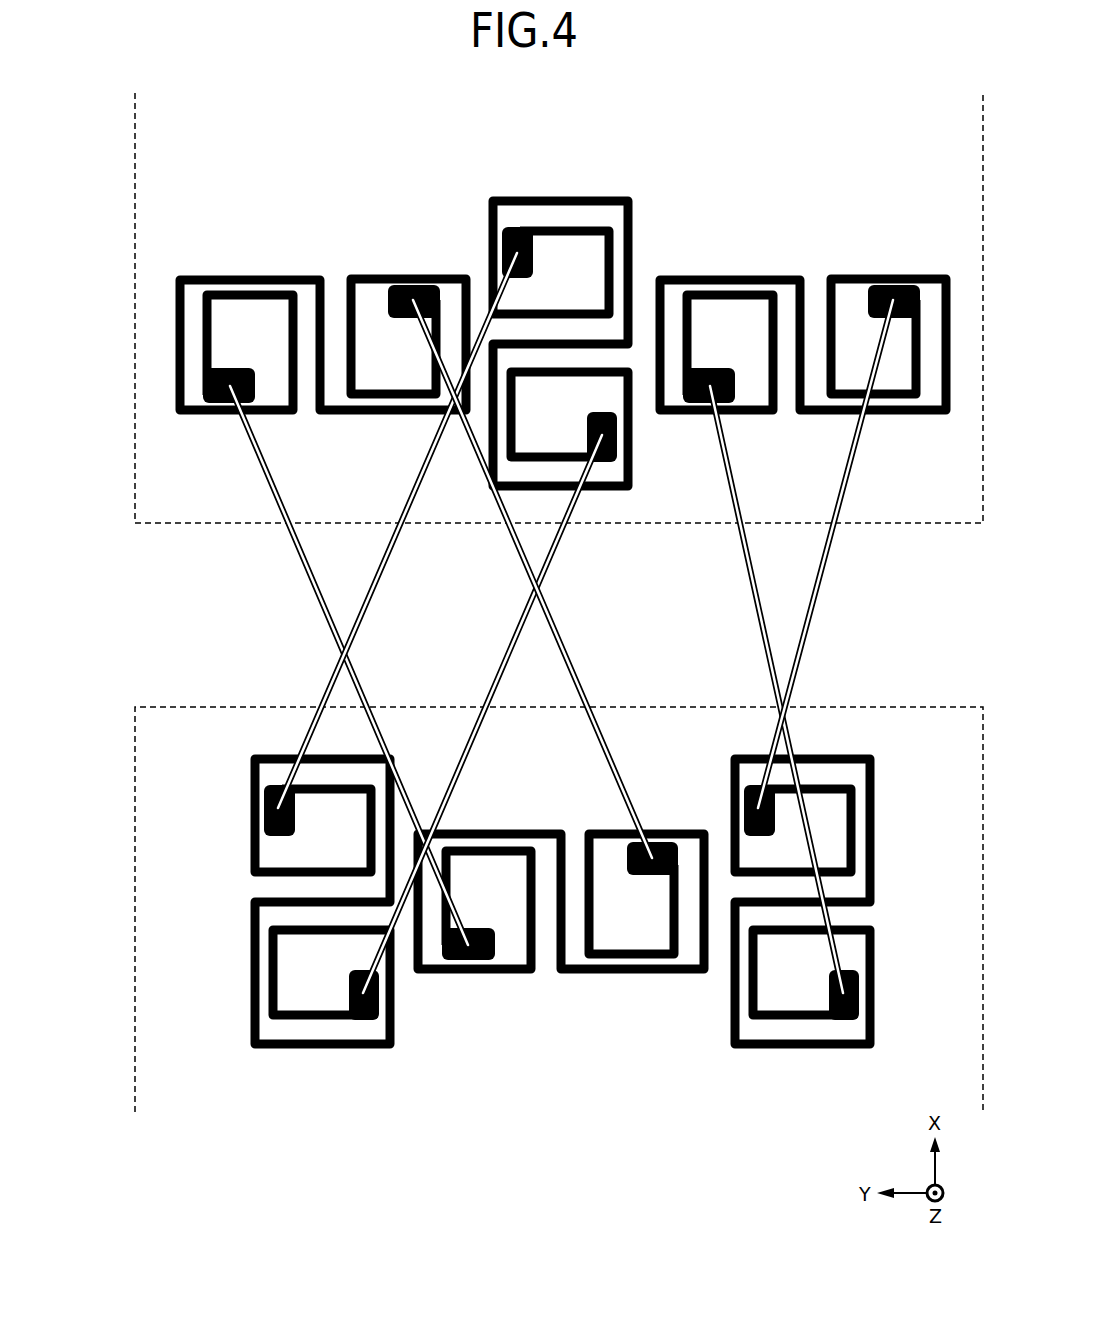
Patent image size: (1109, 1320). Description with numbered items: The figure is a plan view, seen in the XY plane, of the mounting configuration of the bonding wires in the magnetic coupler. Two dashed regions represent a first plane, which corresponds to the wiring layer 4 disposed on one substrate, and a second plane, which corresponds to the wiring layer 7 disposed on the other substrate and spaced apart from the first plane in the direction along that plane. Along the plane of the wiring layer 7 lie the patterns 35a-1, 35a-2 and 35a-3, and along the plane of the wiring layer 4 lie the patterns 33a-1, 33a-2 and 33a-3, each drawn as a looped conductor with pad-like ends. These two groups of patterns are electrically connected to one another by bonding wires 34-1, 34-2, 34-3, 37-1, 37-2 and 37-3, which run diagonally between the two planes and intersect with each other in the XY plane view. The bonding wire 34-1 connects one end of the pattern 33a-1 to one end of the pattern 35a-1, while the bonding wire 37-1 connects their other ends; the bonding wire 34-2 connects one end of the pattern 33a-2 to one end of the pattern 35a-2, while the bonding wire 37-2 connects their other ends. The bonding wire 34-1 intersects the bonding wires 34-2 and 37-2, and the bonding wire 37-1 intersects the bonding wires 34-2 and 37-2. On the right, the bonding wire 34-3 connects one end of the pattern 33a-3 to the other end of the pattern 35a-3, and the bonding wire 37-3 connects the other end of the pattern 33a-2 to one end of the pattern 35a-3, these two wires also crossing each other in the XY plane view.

The wiring layer 7 is at (135, 200).
The wiring layer 4 is at (135, 1055).
The pattern 35a-1 is at (580, 117).
The pattern 35a-2 is at (265, 233).
The pattern 35a-3 is at (845, 233).
The pattern 33a-1 is at (319, 1080).
The pattern 33a-2 is at (492, 1024).
The pattern 33a-3 is at (798, 1080).
The bonding wire 34-1 is at (392, 485).
The bonding wire 34-2 is at (280, 570).
The bonding wire 34-3 is at (850, 556).
The bonding wire 37-1 is at (487, 654).
The bonding wire 37-2 is at (496, 570).
The bonding wire 37-3 is at (730, 606).